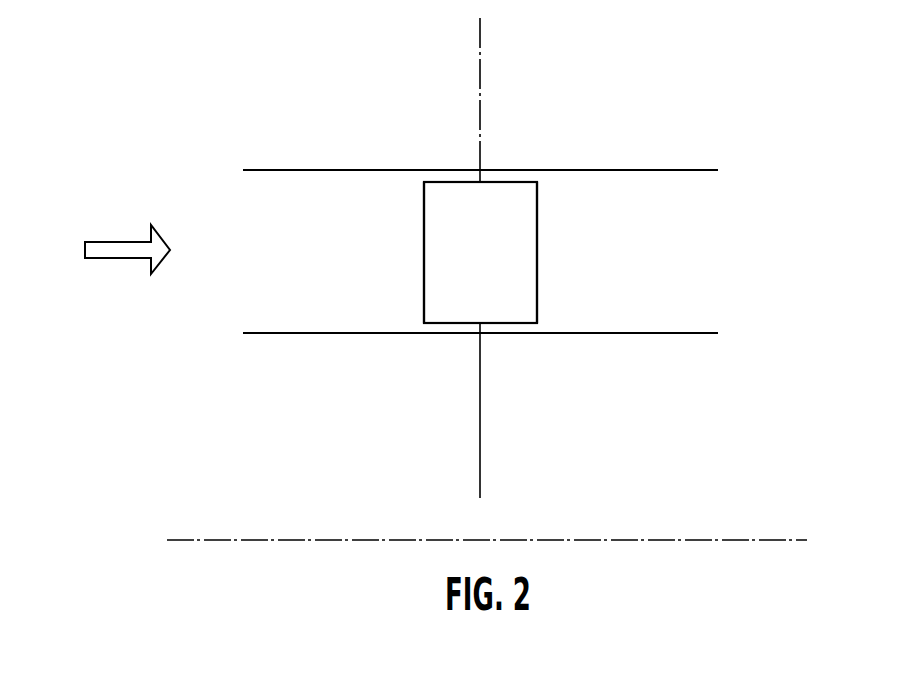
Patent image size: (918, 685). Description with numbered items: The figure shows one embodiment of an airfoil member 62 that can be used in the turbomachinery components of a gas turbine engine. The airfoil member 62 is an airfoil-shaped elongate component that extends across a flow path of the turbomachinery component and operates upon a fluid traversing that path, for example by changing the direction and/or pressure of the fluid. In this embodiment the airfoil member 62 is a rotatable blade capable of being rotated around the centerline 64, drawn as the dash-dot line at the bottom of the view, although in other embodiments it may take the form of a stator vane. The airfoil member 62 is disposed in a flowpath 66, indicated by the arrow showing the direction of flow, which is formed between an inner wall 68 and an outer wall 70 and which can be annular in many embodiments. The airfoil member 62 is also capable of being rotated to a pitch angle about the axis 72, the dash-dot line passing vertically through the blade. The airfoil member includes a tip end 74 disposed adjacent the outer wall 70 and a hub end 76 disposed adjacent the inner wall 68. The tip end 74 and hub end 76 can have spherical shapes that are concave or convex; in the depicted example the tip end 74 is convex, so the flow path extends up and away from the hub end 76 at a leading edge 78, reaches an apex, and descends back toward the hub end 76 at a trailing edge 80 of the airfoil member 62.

The airfoil member 62 is at (538, 224).
The centerline 64 is at (676, 540).
The flowpath 66 is at (254, 257).
The inner wall 68 is at (300, 333).
The outer wall 70 is at (300, 170).
The axis 72 is at (480, 100).
The tip end 74 is at (450, 182).
The hub end 76 is at (437, 323).
The leading edge 78 is at (423, 262).
The trailing edge 80 is at (538, 272).